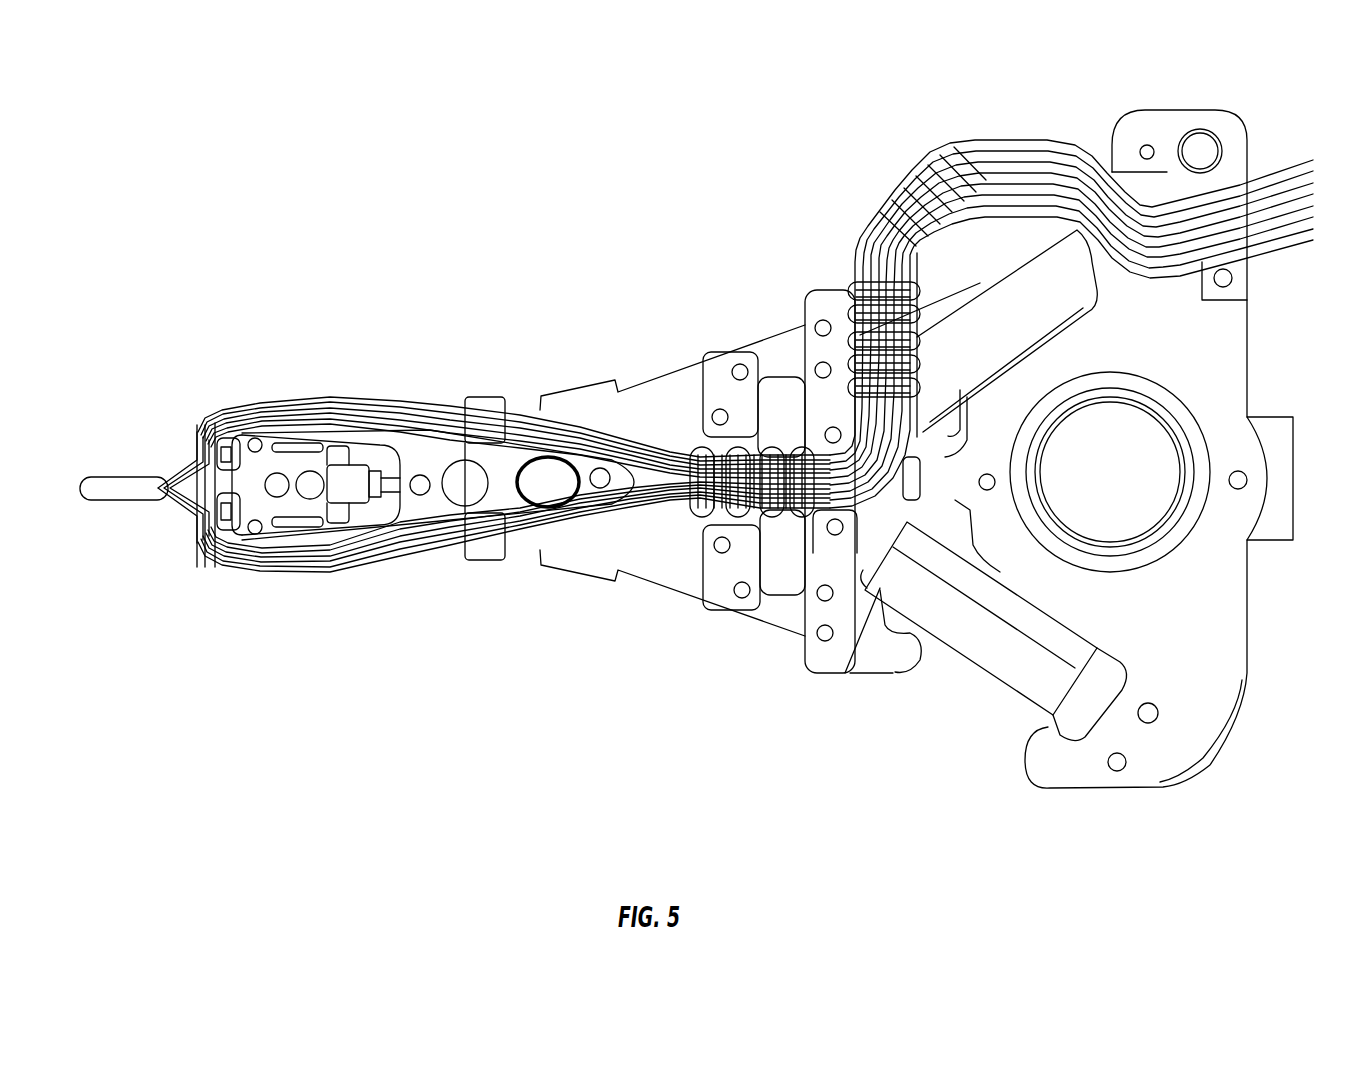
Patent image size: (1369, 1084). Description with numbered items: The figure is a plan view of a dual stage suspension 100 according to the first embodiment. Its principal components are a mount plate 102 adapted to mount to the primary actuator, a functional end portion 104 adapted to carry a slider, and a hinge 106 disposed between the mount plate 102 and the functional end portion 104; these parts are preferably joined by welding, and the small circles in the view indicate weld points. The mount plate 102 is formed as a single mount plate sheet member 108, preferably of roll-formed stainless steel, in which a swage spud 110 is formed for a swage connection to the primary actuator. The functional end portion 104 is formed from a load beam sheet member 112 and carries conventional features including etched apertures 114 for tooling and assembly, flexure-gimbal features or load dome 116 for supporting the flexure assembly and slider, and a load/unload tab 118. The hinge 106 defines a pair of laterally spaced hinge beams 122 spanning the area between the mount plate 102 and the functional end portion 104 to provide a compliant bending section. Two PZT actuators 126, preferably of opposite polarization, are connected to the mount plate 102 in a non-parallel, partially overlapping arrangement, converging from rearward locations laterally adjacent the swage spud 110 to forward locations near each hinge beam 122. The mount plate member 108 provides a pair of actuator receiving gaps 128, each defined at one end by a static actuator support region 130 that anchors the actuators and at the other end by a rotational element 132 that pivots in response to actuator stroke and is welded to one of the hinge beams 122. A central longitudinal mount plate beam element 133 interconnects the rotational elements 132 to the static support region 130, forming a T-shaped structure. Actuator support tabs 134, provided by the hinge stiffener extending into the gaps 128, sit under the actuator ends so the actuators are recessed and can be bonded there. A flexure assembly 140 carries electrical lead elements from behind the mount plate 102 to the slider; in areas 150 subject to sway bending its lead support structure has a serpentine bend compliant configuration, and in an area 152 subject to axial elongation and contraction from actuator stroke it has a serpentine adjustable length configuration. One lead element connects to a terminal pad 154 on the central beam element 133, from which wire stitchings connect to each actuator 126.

The suspension 100 is at (724, 192).
The mount plate 102 is at (1265, 656).
The functional end portion 104 is at (452, 366).
The hinge 106 is at (777, 314).
The mount plate sheet member 108 is at (1159, 449).
The swage spud 110 is at (1148, 415).
The load beam sheet member 112 is at (585, 568).
The etched apertures 114 is at (537, 497).
The flexure-gimbal features (load dome) 116 is at (335, 512).
The load/unload tab 118 is at (165, 476).
The hinge beams 122 is at (778, 342).
The PZT actuators 126 is at (979, 472).
The actuator receiving gaps 128 is at (960, 255).
The static actuator support region 130 is at (1165, 180).
The rotational element 132 is at (837, 323).
The central longitudinal mount plate beam element 133 is at (930, 462).
The actuator support tabs 134 is at (1080, 253).
The flexure assembly 140 is at (1283, 150).
The areas 150 is at (866, 285).
The area 152 is at (900, 187).
The terminal pad 154 is at (913, 487).